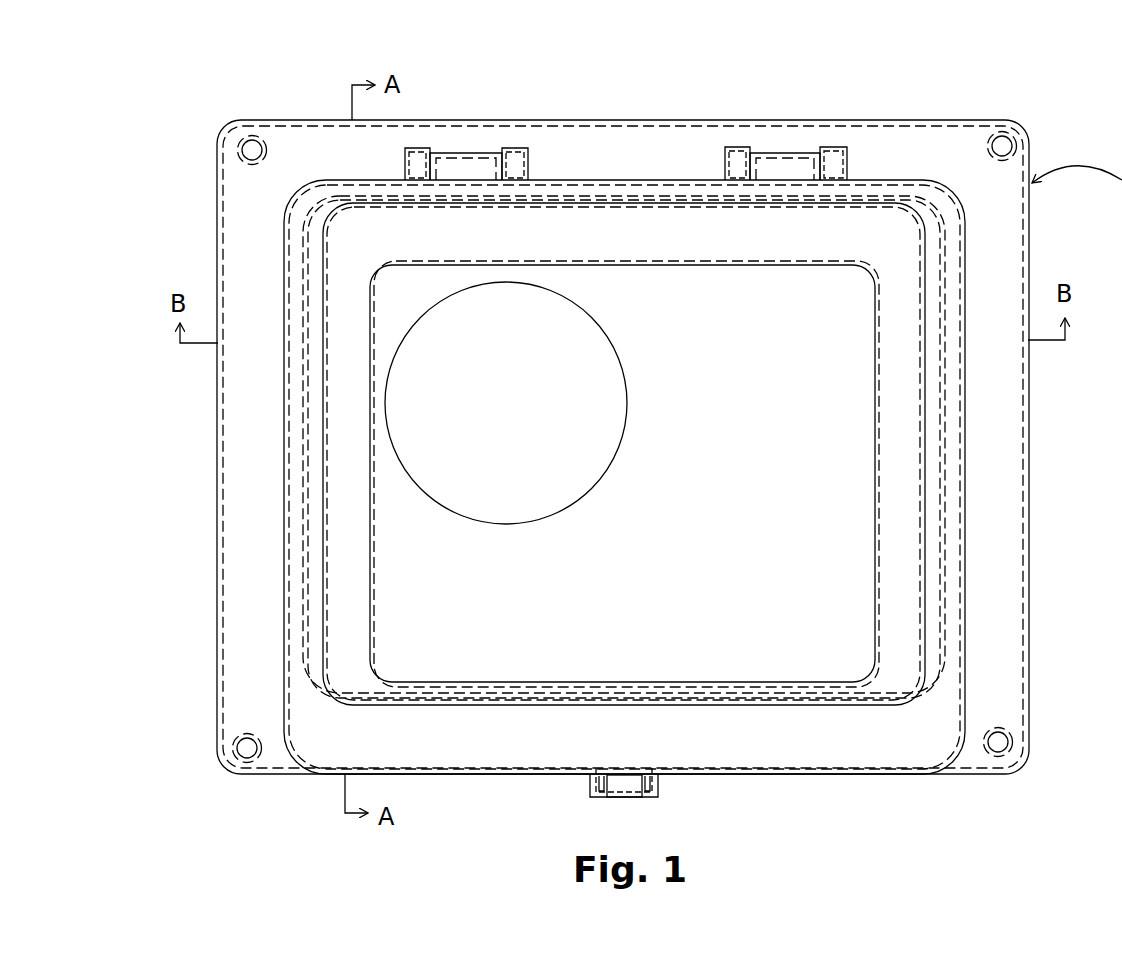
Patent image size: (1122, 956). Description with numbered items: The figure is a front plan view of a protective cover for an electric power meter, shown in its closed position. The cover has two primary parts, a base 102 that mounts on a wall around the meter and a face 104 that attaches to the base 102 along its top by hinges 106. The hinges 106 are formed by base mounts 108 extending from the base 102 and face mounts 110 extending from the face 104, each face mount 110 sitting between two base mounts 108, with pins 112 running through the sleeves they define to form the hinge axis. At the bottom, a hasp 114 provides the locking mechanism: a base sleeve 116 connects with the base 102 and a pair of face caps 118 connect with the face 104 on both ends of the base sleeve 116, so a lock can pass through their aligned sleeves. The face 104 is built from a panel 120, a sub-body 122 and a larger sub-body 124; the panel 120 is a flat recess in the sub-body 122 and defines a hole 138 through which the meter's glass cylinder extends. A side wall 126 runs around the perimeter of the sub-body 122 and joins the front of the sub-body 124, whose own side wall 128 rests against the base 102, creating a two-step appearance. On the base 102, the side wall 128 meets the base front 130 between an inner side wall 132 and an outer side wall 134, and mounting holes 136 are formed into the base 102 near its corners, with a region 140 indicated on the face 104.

The base 102 is at (1004, 205).
The face 104 is at (953, 245).
The hinges 106 is at (531, 147).
The base mounts 108 is at (413, 148).
The face mounts 110 is at (458, 157).
The pins 112 is at (432, 153).
The hasp 114 is at (660, 800).
The base sleeve 116 is at (618, 797).
The face caps 118 is at (592, 790).
The panel 120 is at (447, 640).
The sub-body 122 is at (905, 605).
The sub-body 124 is at (935, 718).
The side wall 126 is at (325, 462).
The side wall 128 is at (284, 535).
The base front 130 is at (998, 562).
The inner side wall 132 is at (940, 528).
The outer side wall 134 is at (1028, 433).
The mounting holes 136 is at (255, 150).
The hole 138 is at (447, 390).
The window area 140 is at (820, 385).